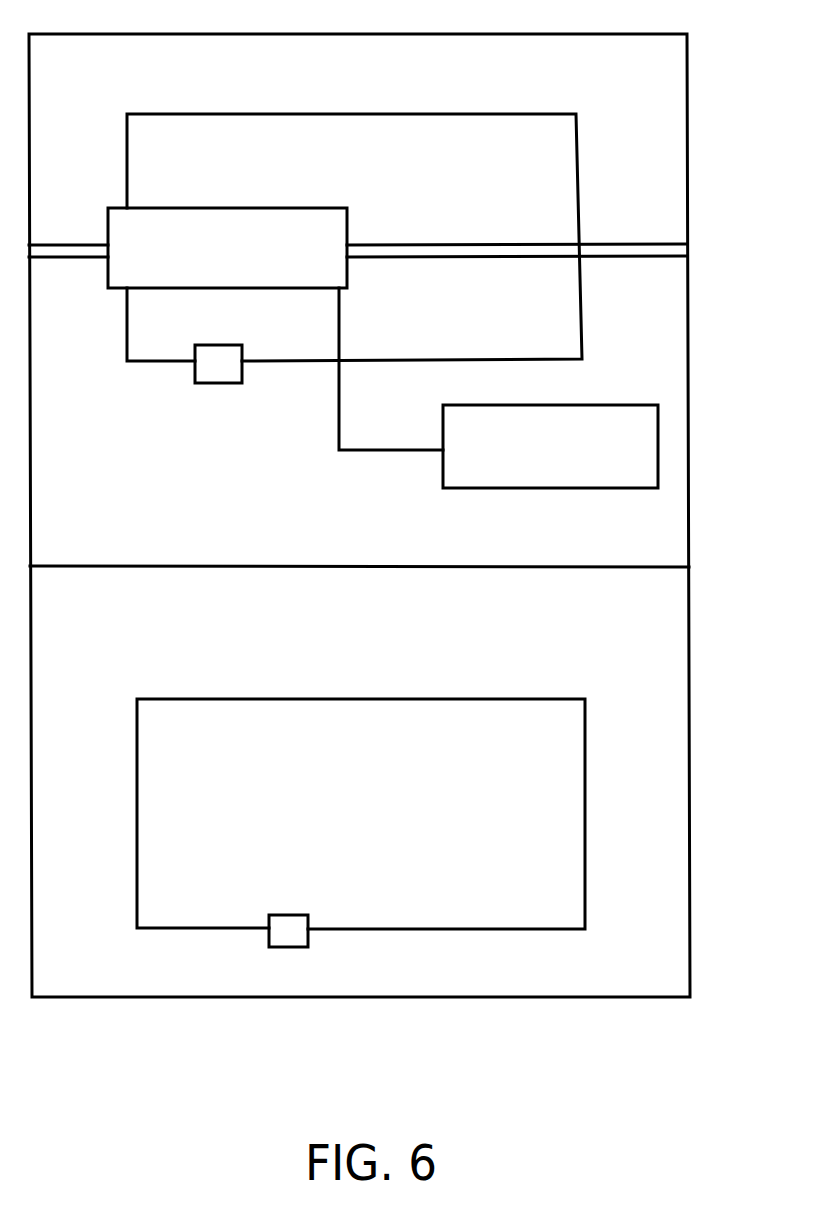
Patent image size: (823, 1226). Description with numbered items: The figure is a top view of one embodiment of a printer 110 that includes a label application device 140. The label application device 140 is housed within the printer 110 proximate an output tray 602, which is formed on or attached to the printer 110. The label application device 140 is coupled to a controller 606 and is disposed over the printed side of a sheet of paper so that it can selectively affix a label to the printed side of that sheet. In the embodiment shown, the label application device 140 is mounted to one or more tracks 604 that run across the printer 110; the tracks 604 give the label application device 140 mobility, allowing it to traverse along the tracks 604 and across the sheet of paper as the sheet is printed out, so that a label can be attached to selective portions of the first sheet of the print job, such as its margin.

The printer 110 is at (688, 81).
The label application device 140 is at (308, 276).
The tracks 604 is at (649, 251).
The controller 606 is at (572, 489).
The output tray 602 is at (677, 700).